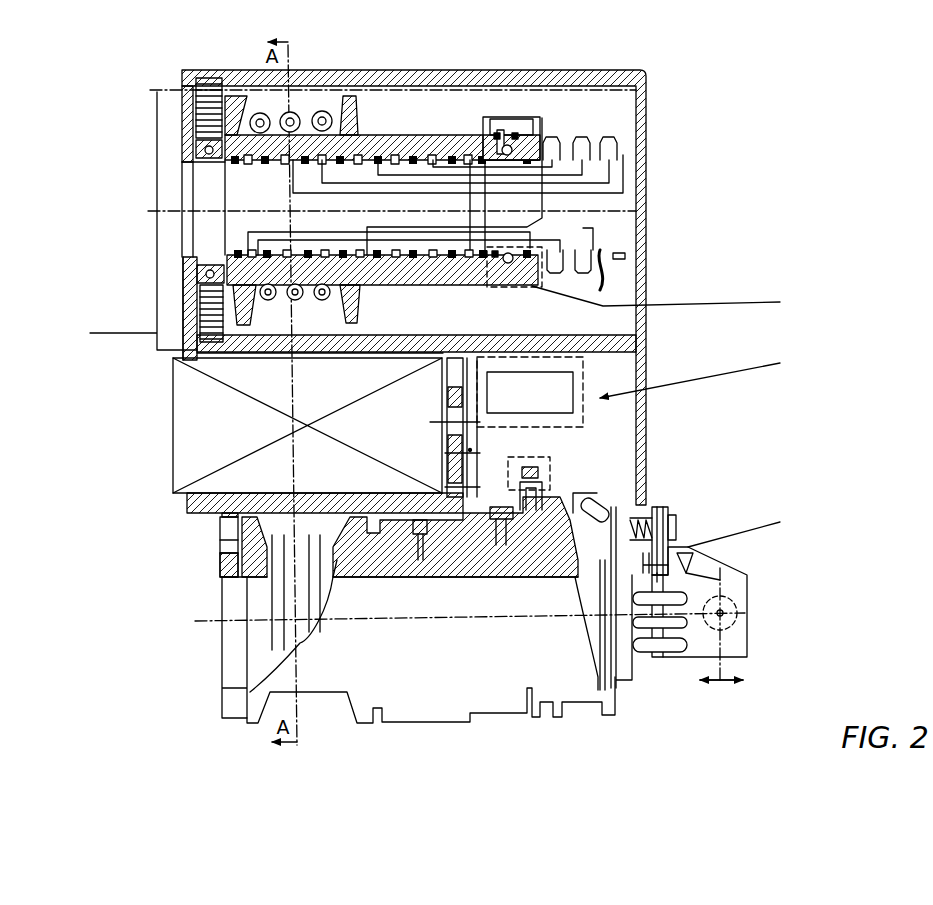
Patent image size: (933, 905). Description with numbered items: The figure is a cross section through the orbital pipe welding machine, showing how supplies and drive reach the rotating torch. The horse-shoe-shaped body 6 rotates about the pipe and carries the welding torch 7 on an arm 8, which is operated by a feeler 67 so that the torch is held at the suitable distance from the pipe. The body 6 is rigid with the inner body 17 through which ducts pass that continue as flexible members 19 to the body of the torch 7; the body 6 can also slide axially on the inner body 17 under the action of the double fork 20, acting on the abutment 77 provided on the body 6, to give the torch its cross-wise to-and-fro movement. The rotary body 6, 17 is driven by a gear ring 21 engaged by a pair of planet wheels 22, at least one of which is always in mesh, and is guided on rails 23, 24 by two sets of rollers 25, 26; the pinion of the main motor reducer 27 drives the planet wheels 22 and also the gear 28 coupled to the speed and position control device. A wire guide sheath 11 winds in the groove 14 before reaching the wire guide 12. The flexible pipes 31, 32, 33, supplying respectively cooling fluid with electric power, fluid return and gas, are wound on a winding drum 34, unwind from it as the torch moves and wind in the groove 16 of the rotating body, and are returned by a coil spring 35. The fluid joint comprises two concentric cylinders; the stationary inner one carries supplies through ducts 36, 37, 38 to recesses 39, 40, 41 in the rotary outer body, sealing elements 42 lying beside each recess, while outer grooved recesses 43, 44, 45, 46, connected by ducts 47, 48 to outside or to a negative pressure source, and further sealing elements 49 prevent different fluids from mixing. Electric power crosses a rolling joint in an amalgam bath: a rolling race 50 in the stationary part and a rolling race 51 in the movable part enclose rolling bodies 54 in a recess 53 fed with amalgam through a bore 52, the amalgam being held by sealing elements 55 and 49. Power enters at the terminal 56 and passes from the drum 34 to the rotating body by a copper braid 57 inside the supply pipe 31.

The body 6 is at (613, 716).
The welding torch 7 is at (722, 614).
The arm 8 is at (663, 550).
The wire guide sheath 11 is at (605, 507).
The wire guide 12 is at (690, 568).
The groove 14 is at (580, 710).
The groove 16 is at (282, 700).
The inner body 17 is at (265, 578).
The flexible members 19 is at (673, 645).
The double fork 20 is at (540, 465).
The gear ring 21 is at (445, 548).
The planet wheels 22 is at (470, 450).
The rail 23 is at (550, 488).
The rail 24 is at (218, 521).
The rollers 25 is at (503, 530).
The rollers 26 is at (222, 530).
The main motor reducer 27 is at (176, 367).
The gear 28 is at (600, 358).
The flexible pipe 31 is at (232, 273).
The flexible pipe 32 is at (238, 258).
The flexible pipe 33 is at (252, 256).
The winding drum 34 is at (205, 300).
The coil spring 35 is at (185, 318).
The duct 36 is at (556, 138).
The duct 37 is at (588, 138).
The duct 38 is at (615, 140).
The recess 39 is at (416, 205).
The recess 40 is at (456, 186).
The recess 41 is at (440, 130).
The sealing elements 42 is at (288, 112).
The grooved recess 43 is at (353, 250).
The grooved recess 44 is at (340, 255).
The grooved recess 45 is at (440, 278).
The grooved recess 46 is at (432, 282).
The duct 47 is at (565, 240).
The duct 48 is at (596, 240).
The sealing elements 49 is at (262, 162).
The rolling race 50 is at (548, 218).
The rolling race 51 is at (593, 226).
The bore 52 is at (497, 133).
The recess 53 is at (502, 133).
The rolling bodies 54 is at (510, 145).
The sealing elements 55 is at (527, 134).
The terminal 56 is at (618, 252).
The copper braid 57 is at (203, 92).
The feeler 67 is at (660, 566).
The abutment 77 is at (535, 717).